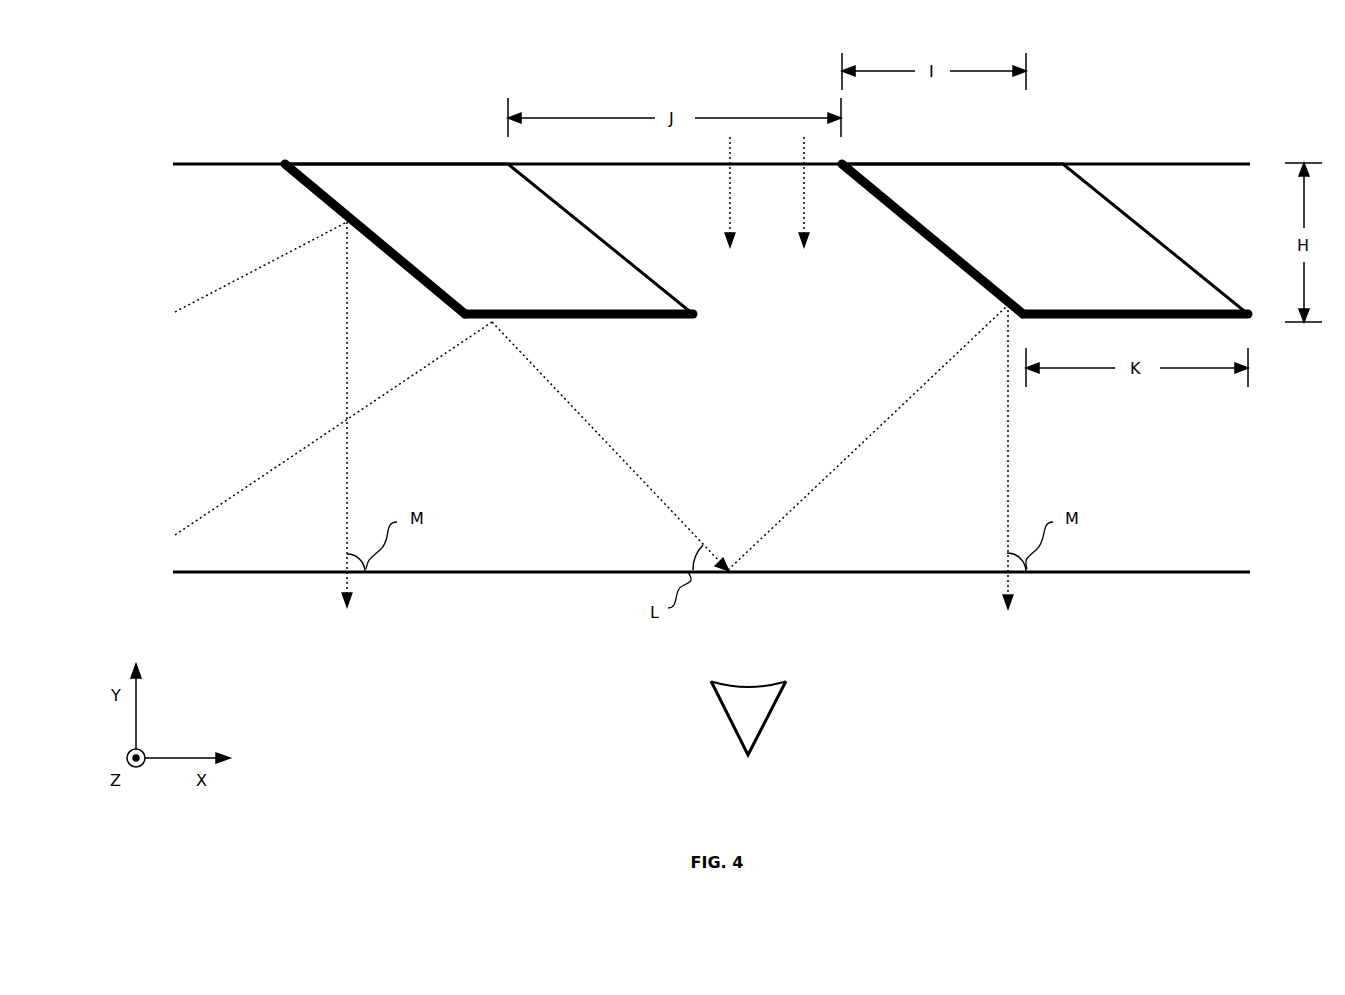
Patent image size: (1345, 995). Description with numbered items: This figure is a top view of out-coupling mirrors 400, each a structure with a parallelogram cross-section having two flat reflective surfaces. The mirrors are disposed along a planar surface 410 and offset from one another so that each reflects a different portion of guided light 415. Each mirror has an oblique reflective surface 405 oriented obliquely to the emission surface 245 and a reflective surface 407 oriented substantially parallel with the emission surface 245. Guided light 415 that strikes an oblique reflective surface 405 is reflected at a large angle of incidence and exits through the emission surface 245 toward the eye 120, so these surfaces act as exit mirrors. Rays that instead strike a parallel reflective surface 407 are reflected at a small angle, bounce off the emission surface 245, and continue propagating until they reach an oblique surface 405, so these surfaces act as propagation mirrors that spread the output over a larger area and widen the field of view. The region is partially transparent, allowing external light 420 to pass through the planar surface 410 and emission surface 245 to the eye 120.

The planar surface 410 is at (237, 163).
The out-coupling mirrors 400 is at (482, 242).
The oblique reflective surface 405 is at (300, 180).
The substantially parallel reflective surface 407 is at (635, 318).
The external light 420 is at (728, 178).
The guided light 415 is at (210, 292).
The emission surface 245 is at (560, 573).
The eye 120 is at (730, 720).